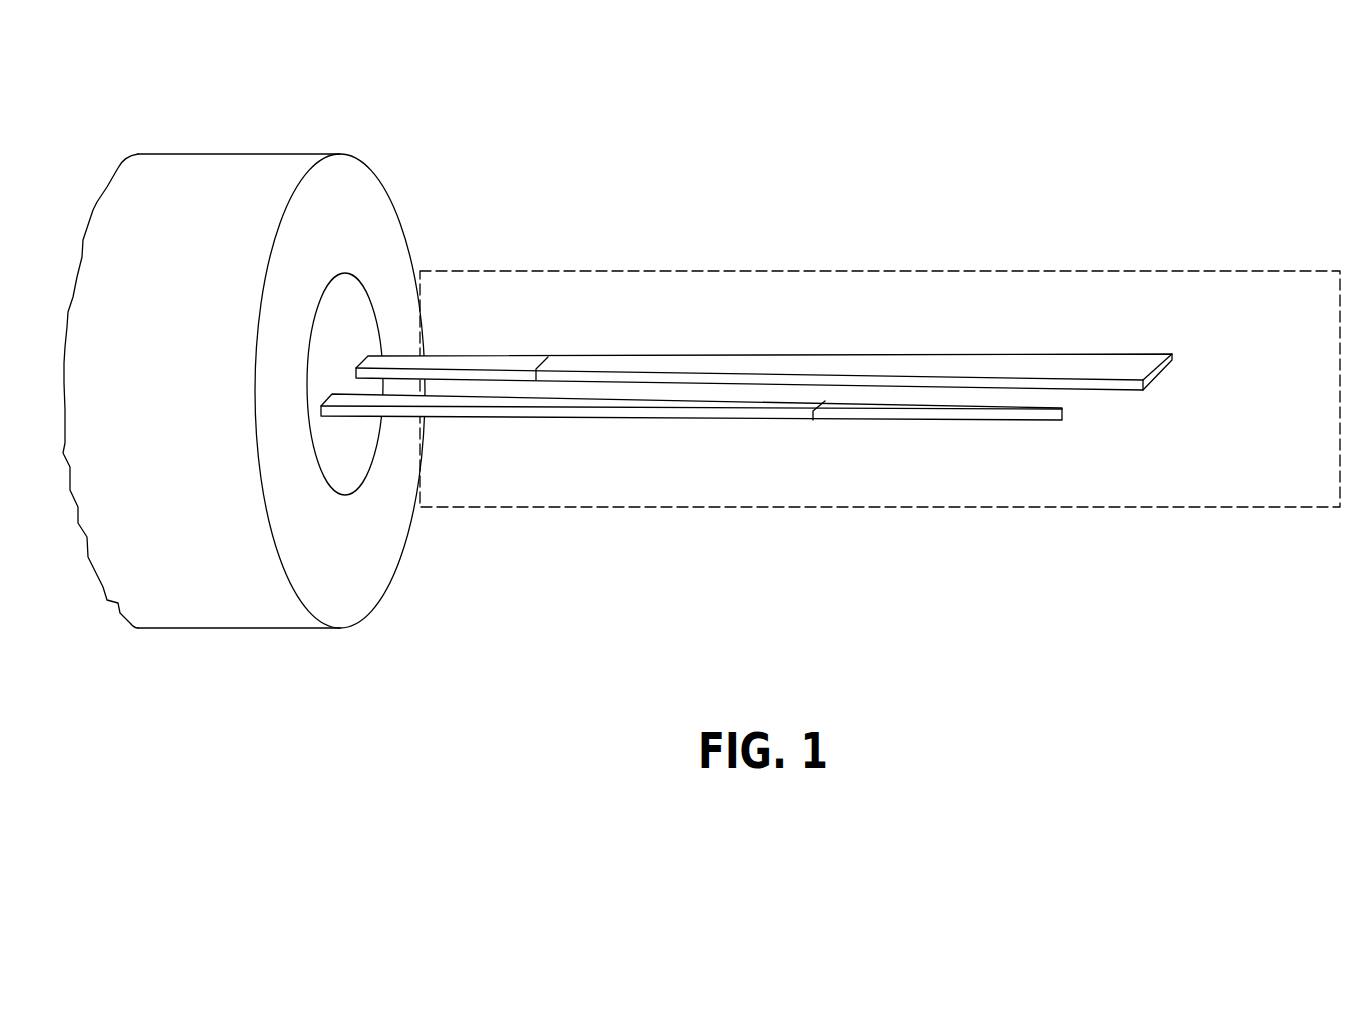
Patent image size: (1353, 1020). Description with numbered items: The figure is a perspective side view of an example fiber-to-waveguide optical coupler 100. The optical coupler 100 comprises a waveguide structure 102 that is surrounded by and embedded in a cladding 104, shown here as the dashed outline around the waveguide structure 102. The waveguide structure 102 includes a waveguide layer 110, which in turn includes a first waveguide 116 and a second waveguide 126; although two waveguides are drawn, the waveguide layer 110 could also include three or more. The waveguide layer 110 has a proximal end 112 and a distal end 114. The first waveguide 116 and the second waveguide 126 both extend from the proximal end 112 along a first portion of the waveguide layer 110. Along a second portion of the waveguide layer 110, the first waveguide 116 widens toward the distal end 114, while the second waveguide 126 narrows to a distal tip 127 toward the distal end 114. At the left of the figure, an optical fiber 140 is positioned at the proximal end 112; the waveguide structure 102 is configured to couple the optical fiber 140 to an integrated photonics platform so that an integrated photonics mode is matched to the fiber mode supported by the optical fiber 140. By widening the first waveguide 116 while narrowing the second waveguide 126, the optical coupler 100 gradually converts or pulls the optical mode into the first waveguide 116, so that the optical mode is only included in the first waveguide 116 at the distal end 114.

The fiber-to-waveguide optical coupler 100 is at (701, 363).
The waveguide structure 102 is at (815, 382).
The cladding 104 is at (838, 507).
The waveguide layer 110 is at (800, 314).
The proximal end 112 is at (415, 362).
The distal end 114 is at (1105, 362).
The first waveguide 116 is at (475, 362).
The second waveguide 126 is at (691, 474).
The distal tip 127 is at (922, 409).
The optical fiber 140 is at (258, 170).